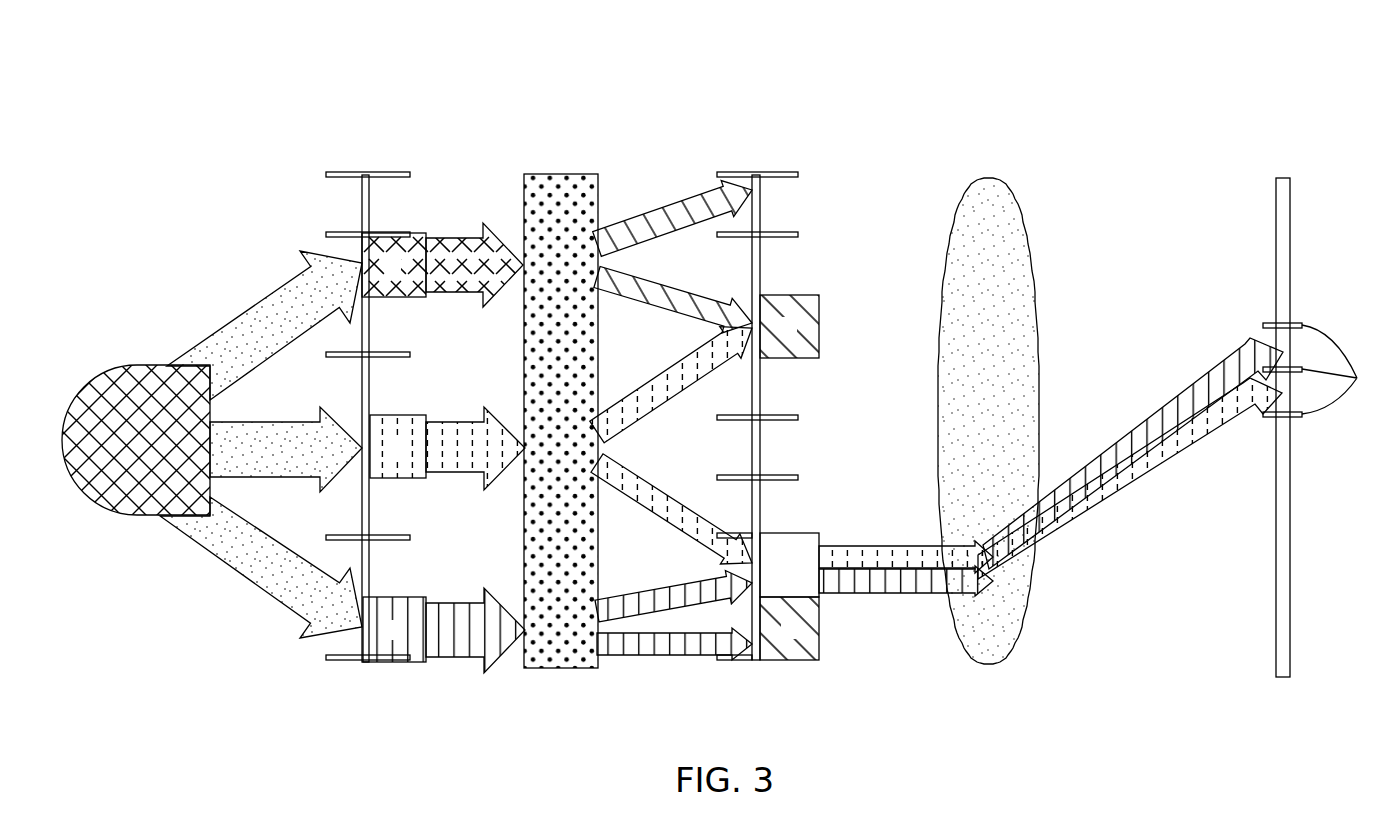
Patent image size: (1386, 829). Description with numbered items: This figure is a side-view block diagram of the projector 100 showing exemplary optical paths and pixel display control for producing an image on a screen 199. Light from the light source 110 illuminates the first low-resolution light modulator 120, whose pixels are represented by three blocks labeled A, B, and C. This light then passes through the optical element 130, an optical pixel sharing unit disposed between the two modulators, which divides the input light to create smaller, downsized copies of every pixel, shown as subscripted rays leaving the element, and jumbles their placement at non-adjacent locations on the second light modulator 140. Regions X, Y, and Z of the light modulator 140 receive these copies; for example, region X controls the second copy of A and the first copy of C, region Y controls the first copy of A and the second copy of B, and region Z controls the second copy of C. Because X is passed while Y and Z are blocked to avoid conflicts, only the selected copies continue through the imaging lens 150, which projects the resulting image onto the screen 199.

The projector 100 is at (145, 91).
The light source 110 is at (88, 383).
The light modulator 120 is at (367, 172).
The optical element 130 is at (558, 174).
The light modulator 140 is at (757, 172).
The imaging lens 150 is at (988, 177).
The screen 199 is at (1276, 612).